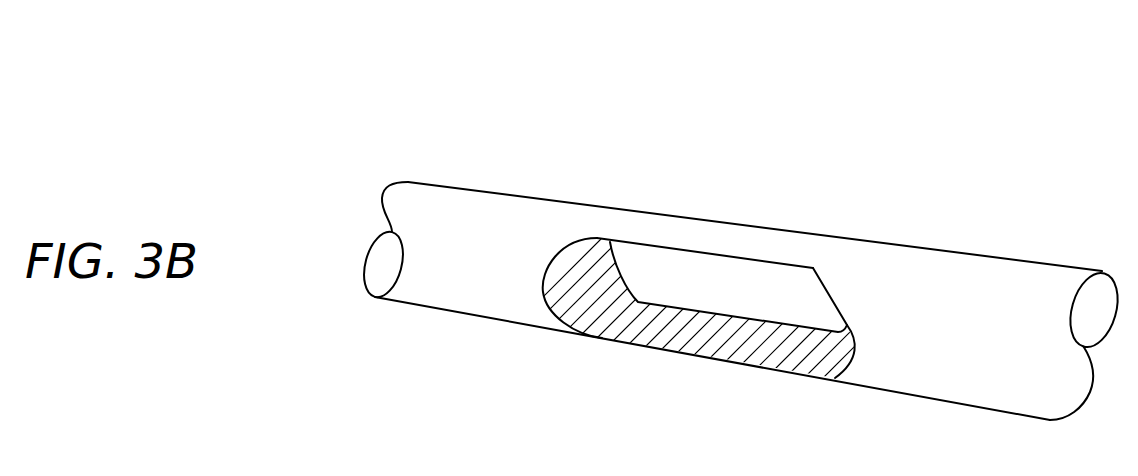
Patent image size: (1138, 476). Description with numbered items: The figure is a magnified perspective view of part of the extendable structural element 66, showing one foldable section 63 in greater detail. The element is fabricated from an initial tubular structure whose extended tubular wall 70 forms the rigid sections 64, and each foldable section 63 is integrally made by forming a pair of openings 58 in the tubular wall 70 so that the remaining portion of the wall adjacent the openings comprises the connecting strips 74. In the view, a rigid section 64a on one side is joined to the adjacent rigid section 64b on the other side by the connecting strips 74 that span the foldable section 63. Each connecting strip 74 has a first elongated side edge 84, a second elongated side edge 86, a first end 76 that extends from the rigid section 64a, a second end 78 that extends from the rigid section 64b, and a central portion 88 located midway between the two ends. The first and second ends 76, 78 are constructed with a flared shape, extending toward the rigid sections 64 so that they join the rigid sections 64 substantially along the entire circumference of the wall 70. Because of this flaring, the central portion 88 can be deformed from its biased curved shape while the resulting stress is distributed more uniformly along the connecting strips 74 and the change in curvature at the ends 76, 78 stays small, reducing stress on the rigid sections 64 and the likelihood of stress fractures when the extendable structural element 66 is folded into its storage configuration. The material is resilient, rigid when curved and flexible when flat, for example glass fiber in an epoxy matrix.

The extendable structural element 66 is at (760, 137).
The rigid sections 64 is at (487, 215).
The rigid section 64a is at (457, 300).
The adjacent rigid section 64b is at (983, 357).
The tubular wall 70 is at (1000, 288).
The first end 76 is at (577, 235).
The first elongated side edge 84 is at (633, 240).
The connecting strip 74 is at (683, 223).
The central portion 88 is at (742, 224).
The second elongated side edge 86 is at (778, 229).
The foldable section 63 is at (801, 241).
The second end 78 is at (877, 253).
The opening 58 is at (750, 342).